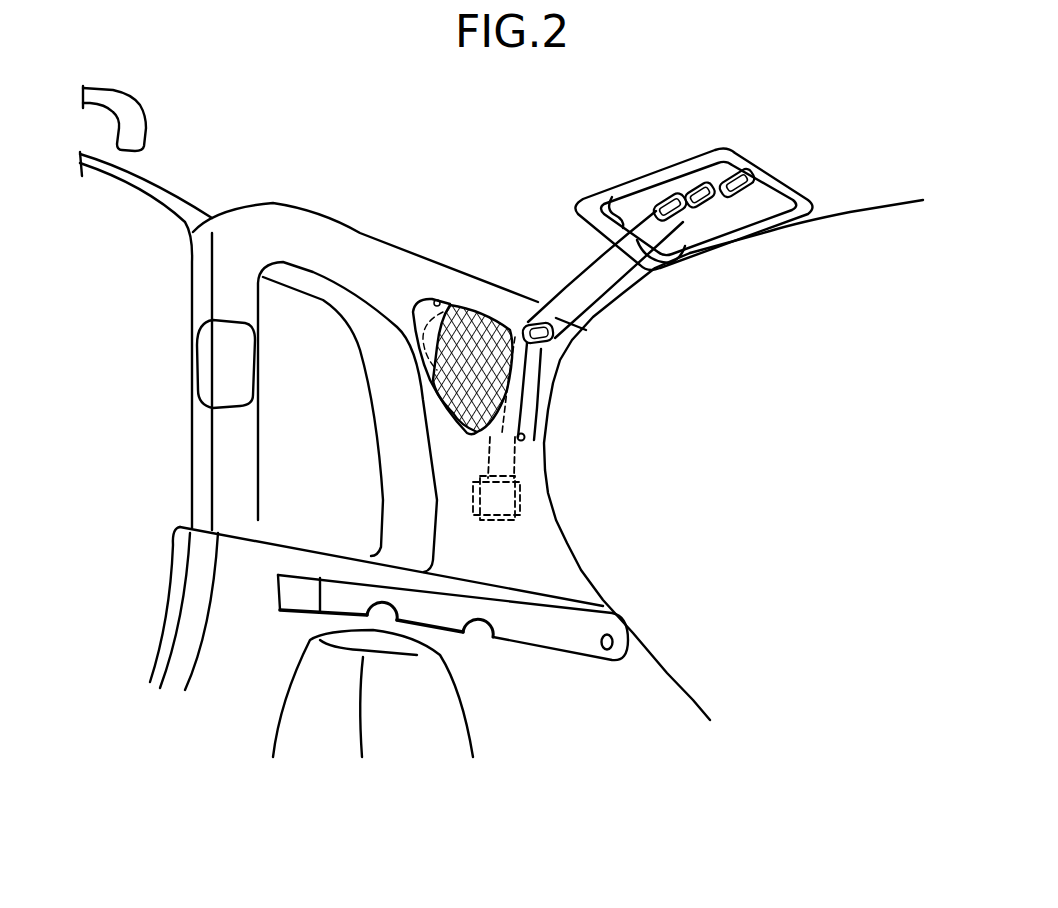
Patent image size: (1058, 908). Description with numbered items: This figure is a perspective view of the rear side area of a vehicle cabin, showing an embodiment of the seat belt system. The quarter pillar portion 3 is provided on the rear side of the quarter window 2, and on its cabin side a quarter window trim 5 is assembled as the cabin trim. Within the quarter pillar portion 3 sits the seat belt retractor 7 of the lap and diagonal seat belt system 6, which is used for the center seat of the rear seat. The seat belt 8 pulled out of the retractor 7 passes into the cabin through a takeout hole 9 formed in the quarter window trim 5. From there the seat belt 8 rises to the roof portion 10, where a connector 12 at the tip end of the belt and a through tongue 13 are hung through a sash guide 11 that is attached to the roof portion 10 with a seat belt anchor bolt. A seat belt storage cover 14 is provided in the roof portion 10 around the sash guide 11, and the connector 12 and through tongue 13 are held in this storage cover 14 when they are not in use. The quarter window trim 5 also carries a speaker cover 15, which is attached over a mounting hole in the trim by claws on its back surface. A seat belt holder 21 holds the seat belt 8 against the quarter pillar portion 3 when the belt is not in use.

The quarter window 2 is at (306, 347).
The quarter pillar portion 3 is at (582, 512).
The quarter window trim 5 is at (577, 583).
The lap and diagonal seat belt system 6 is at (553, 277).
The seat belt retractor 7 is at (500, 520).
The seat belt 8 is at (522, 393).
The takeout hole 9 is at (526, 437).
The roof portion 10 is at (887, 170).
The sash guide 11 is at (683, 220).
The connector 12 is at (757, 195).
The through tongue 13 is at (710, 205).
The seat belt storage cover 14 is at (777, 182).
The speaker cover 15 is at (440, 300).
The seat belt holder 21 is at (555, 333).